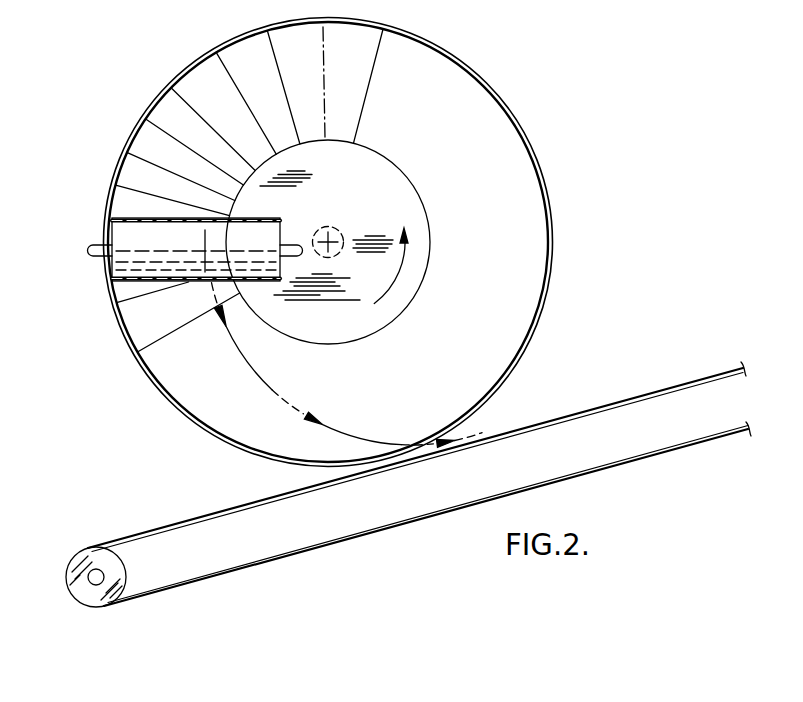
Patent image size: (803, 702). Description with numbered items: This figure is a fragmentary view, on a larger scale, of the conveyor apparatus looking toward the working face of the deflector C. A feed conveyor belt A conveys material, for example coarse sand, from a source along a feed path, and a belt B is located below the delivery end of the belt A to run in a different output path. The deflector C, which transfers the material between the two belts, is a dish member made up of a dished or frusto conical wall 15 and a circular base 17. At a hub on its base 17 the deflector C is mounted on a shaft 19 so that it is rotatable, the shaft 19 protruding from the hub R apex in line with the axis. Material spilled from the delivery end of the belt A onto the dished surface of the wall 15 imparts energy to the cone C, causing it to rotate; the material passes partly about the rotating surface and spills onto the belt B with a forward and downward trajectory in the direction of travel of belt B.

The feed conveyor belt A is at (143, 218).
The belt B is at (608, 398).
The deflector C is at (522, 130).
The frusto conical wall 15 is at (545, 206).
The circular base 17 is at (407, 205).
The shaft 19 is at (326, 229).
The hub apex R is at (337, 233).